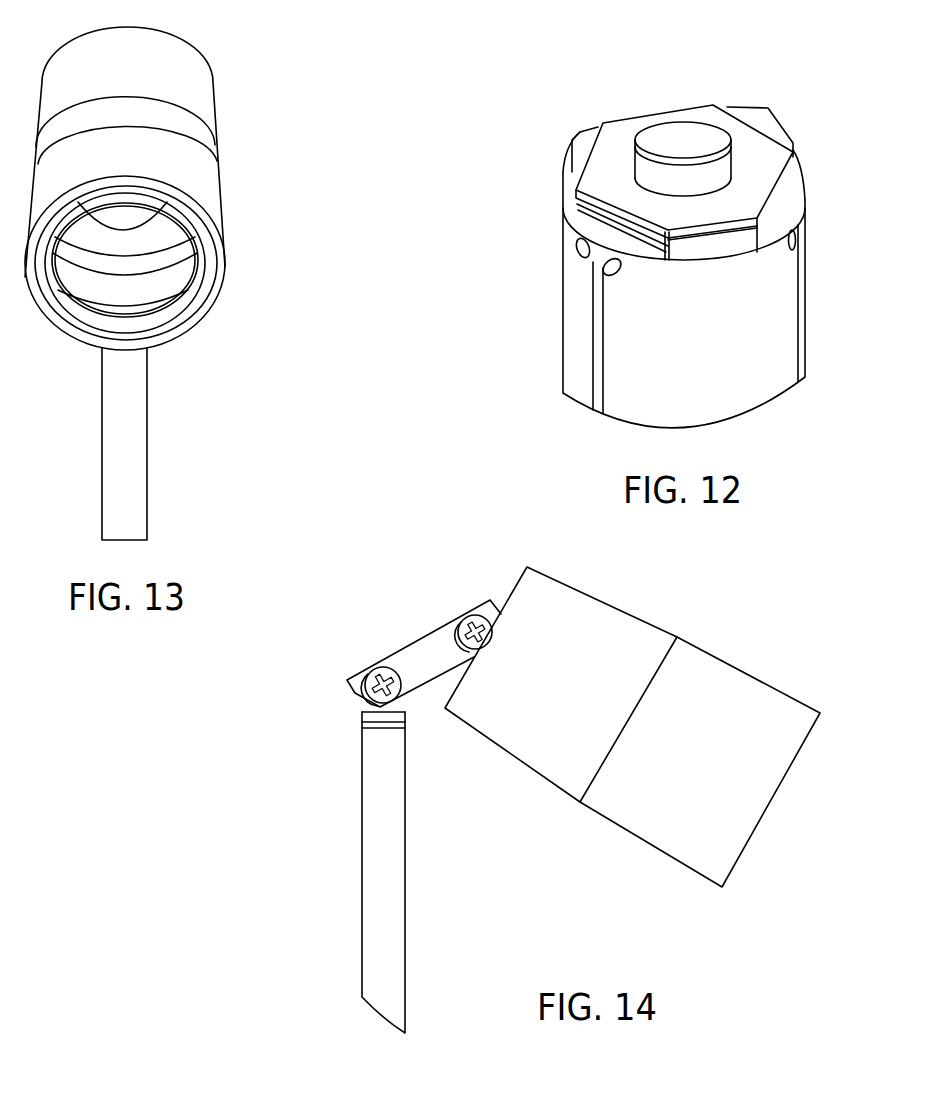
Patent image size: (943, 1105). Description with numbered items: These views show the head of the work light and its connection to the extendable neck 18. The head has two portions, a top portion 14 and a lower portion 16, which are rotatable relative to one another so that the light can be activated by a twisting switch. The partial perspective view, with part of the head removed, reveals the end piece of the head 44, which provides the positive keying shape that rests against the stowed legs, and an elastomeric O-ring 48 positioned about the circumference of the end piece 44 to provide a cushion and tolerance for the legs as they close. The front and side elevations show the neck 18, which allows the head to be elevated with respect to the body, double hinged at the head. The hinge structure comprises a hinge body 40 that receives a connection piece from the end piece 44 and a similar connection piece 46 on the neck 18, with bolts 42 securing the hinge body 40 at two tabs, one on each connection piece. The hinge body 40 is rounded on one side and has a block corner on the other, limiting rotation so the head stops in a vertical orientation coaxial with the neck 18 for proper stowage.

In FIG. 13, the top portion of the head 14 is at (212, 212).
In FIG. 14, the top portion of the head 14 is at (734, 758).
In FIG. 13, the lower portion of the head 16 is at (146, 68).
In FIG. 14, the lower portion of the head 16 is at (576, 677).
In FIG. 13, the neck 18 is at (130, 498).
In FIG. 14, the neck 18 is at (368, 927).
In FIG. 14, the hinge body 40 is at (427, 642).
In FIG. 14, the bolts 42 is at (382, 670).
In FIG. 12, the end piece of the head 44 is at (745, 168).
In FIG. 14, the connection piece on the neck 46 is at (407, 710).
In FIG. 12, the O-ring 48 is at (597, 207).